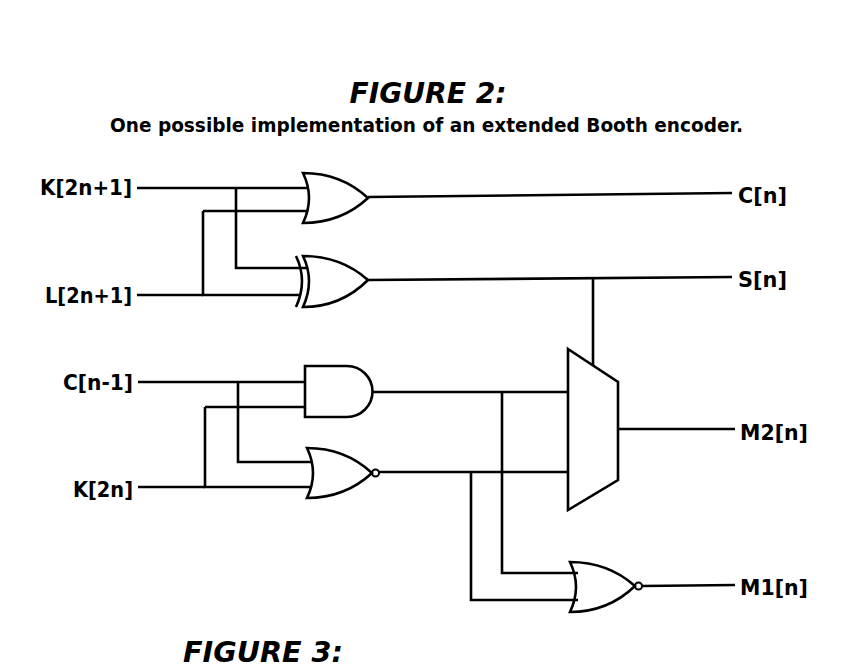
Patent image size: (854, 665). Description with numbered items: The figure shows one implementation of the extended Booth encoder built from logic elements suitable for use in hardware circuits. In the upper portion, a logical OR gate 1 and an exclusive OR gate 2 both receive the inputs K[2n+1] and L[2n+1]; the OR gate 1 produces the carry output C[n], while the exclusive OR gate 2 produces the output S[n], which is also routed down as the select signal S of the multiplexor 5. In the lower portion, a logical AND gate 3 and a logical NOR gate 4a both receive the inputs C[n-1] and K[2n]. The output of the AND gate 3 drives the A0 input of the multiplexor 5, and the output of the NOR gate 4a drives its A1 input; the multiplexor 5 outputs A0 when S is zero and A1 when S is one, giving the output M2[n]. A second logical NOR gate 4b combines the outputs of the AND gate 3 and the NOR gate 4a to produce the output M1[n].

The logical OR gate 1 is at (338, 190).
The exclusive OR gate 2 is at (338, 272).
The logical AND gate 3 is at (347, 383).
The logical NOR gate 4a is at (340, 482).
The logical NOR gate 4b is at (603, 595).
The multiplexor 5 is at (603, 462).